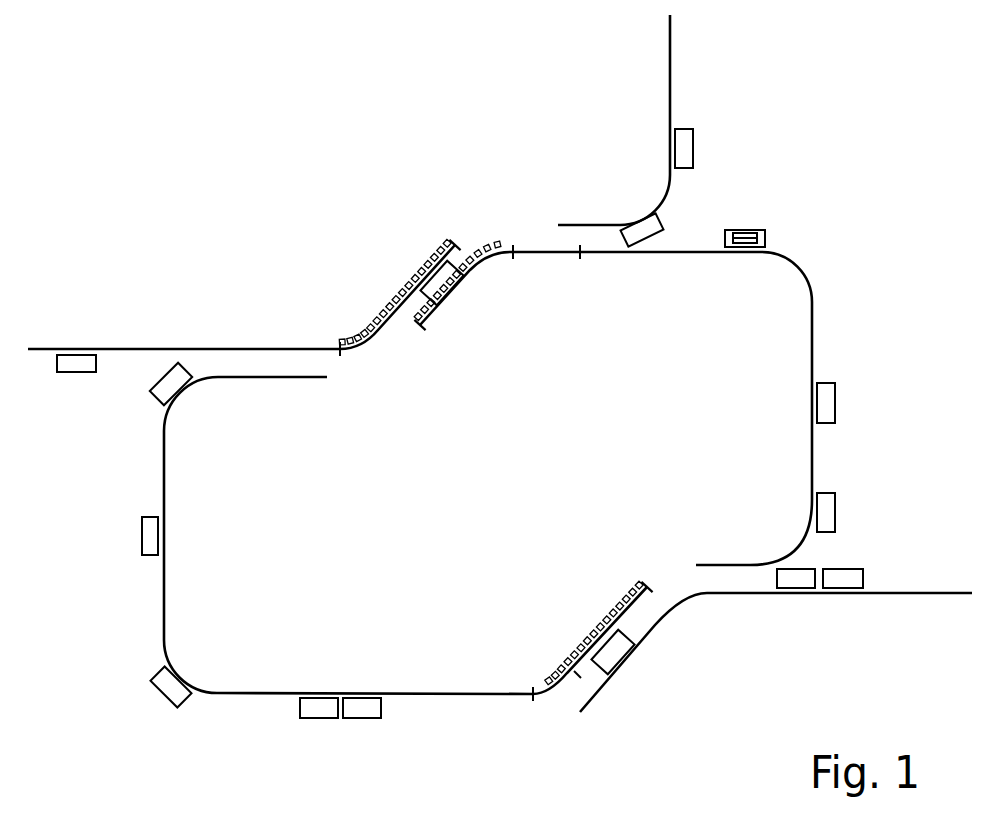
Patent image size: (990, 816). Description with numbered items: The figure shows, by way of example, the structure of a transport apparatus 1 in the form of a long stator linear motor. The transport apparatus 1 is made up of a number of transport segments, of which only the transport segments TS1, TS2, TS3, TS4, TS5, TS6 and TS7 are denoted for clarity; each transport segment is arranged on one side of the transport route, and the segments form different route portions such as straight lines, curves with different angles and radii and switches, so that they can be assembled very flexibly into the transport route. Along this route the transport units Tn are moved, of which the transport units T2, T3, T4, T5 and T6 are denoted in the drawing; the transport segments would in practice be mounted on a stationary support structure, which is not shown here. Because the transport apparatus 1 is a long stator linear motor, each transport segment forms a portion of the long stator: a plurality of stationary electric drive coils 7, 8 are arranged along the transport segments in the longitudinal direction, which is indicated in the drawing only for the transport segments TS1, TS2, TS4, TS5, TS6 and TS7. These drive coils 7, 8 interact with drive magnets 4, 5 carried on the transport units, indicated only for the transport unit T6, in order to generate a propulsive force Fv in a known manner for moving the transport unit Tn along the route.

The transport apparatus 1 is at (190, 197).
The drive magnet 4 is at (748, 233).
The drive magnet 5 is at (746, 247).
The electric drive coil 7 is at (378, 302).
The electric drive coil 8 is at (505, 268).
The transport unit Tn is at (70, 365).
The transport unit T2 is at (152, 536).
The transport unit T3 is at (170, 684).
The transport unit T4 is at (330, 708).
The transport unit T5 is at (797, 578).
The transport unit T6 is at (797, 238).
The transport segment TS1 is at (430, 318).
The transport segment TS2 is at (490, 255).
The transport segment TS3 is at (562, 253).
The transport segment TS4 is at (447, 243).
The transport segment TS5 is at (363, 347).
The transport segment TS6 is at (557, 688).
The transport segment TS7 is at (633, 610).
The propulsive force Fv is at (238, 755).